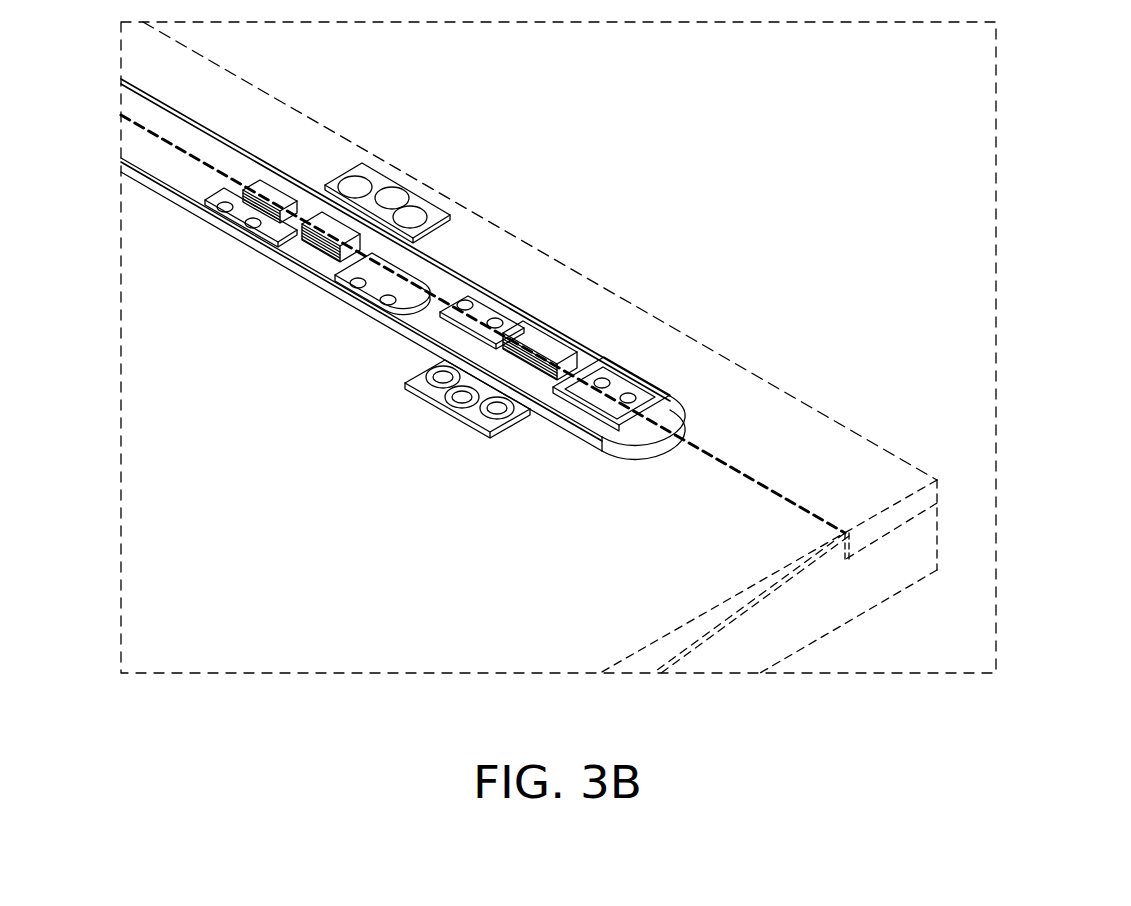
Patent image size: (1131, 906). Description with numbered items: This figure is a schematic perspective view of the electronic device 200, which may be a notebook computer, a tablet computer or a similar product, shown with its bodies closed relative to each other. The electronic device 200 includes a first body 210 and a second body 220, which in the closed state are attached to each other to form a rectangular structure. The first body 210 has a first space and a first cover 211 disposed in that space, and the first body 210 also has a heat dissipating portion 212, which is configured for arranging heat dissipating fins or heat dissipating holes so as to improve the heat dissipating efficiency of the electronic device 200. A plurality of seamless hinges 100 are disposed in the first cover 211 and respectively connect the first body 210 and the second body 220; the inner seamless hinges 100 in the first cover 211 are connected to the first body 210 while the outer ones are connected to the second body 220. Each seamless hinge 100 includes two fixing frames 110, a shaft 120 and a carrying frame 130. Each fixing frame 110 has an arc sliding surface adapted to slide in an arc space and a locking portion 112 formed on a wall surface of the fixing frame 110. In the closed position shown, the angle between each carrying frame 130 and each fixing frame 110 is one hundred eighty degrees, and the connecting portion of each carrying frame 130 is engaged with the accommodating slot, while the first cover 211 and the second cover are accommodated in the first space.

The seamless hinge 100 is at (721, 262).
The fixing frame 110 is at (604, 358).
The locking portion 112 is at (487, 310).
The shaft 120 is at (565, 405).
The carrying frame 130 is at (495, 380).
The electronic device 200 is at (1118, 679).
The first body 210 is at (930, 537).
The first cover 211 is at (637, 433).
The heat dissipating portion 212 is at (935, 497).
The second body 220 is at (793, 530).